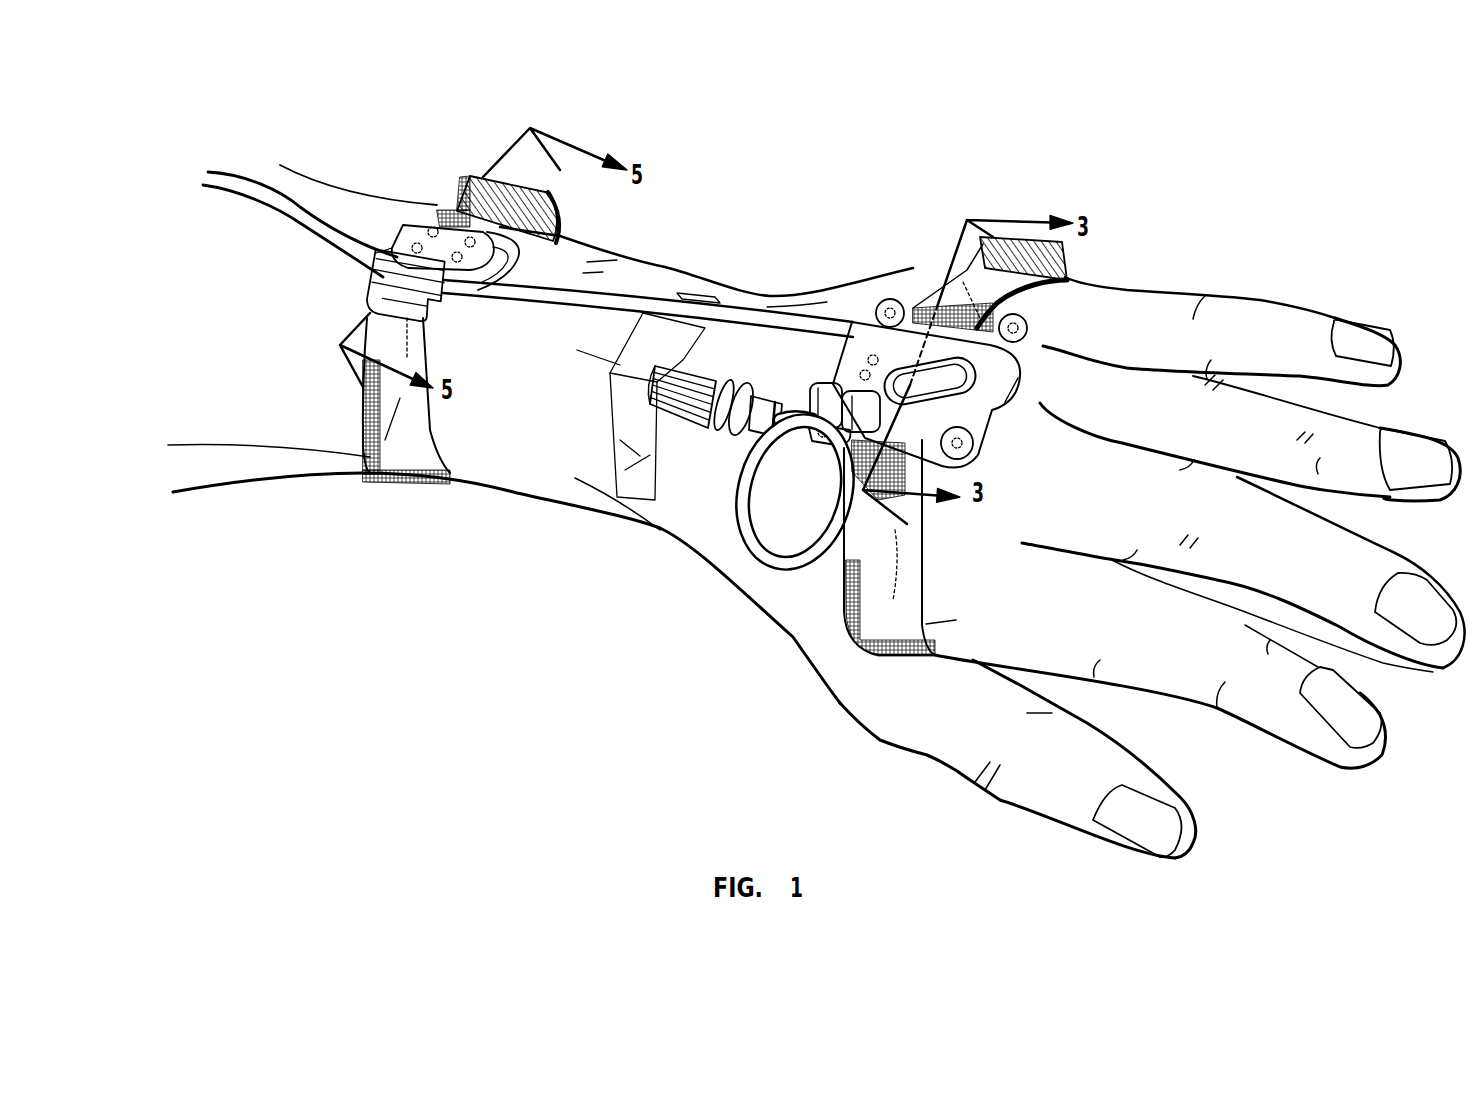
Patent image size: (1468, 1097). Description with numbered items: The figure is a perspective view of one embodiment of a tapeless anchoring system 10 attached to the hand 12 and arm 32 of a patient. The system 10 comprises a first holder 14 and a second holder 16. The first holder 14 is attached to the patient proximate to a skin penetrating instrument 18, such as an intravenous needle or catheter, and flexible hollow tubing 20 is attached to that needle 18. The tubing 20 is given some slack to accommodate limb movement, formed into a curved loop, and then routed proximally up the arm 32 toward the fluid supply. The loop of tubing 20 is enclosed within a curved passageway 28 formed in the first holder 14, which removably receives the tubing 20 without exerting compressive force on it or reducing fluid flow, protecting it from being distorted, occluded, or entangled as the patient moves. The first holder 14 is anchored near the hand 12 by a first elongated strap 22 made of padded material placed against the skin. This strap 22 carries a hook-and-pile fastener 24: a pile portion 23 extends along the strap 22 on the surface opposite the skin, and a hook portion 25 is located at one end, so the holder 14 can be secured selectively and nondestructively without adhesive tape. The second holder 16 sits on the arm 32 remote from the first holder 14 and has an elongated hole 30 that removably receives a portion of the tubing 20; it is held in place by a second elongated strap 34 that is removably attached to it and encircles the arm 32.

The tapeless anchoring system 10 is at (726, 165).
The hand 12 is at (1267, 307).
The first holder 14 is at (873, 303).
The second holder 16 is at (403, 224).
The skin penetrating instrument 18 is at (677, 400).
The flexible hollow tubing 20 is at (747, 538).
The first elongated strap 22 is at (873, 600).
The pile portion 23 is at (918, 637).
The hook-and-pile fastener 24 is at (458, 180).
The hook portion 25 is at (560, 220).
The passageway 28 is at (1047, 383).
The elongated hole 30 is at (457, 313).
The arm 32 is at (323, 185).
The second elongated strap 34 is at (410, 443).